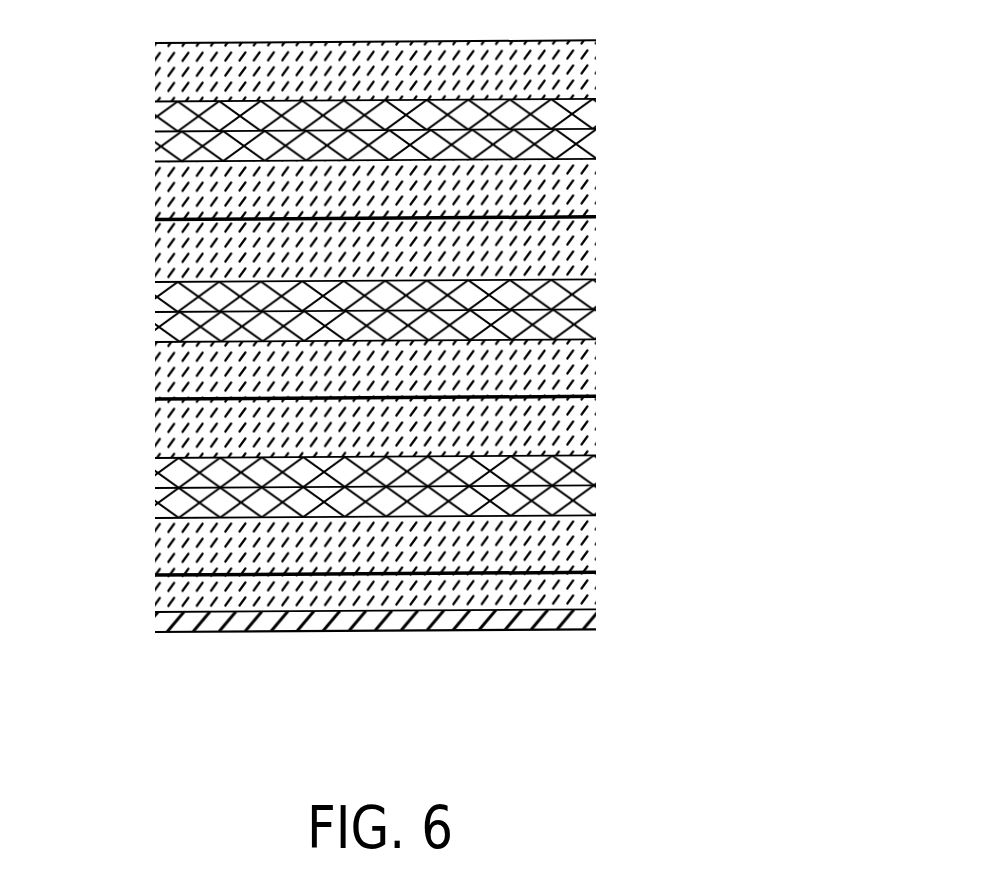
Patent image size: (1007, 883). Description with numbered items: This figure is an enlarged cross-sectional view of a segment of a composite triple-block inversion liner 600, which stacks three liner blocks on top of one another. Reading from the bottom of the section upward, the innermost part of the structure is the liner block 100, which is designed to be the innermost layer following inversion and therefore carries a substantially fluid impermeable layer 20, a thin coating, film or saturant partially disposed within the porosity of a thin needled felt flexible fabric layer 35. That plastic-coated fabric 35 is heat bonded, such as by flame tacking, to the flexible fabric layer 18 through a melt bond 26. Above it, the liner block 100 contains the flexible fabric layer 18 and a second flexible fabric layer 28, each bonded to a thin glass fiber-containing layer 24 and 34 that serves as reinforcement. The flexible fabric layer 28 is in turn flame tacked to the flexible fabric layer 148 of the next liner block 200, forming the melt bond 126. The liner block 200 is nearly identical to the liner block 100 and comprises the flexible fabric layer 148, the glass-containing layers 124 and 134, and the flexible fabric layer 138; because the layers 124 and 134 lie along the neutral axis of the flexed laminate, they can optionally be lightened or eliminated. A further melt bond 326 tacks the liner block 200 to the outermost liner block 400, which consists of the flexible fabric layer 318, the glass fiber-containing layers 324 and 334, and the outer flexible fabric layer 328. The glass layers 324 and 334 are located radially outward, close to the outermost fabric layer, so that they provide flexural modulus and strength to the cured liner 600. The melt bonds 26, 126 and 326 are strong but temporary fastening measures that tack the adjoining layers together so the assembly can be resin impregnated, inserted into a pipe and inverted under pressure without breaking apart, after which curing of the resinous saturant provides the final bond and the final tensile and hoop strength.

The composite liner 600 is at (443, 371).
The liner block 400 is at (376, 145).
The liner block 200 is at (376, 312).
The liner block 100 is at (384, 492).
The flexible fabric layer 328 is at (586, 70).
The glass fiber-containing layer 334 is at (584, 118).
The glass fiber-containing layer 324 is at (583, 148).
The flexible fabric layer 318 is at (572, 184).
The melt bond 326 is at (598, 218).
The flexible fabric layer 138 is at (178, 248).
The glass-containing layer 134 is at (160, 301).
The glass-containing layer 124 is at (173, 330).
The flexible fabric layer 148 is at (160, 372).
The melt bond 126 is at (597, 394).
The flexible fabric layer 28 is at (160, 427).
The glass fiber-containing layer 34 is at (162, 477).
The glass fiber-containing layer 24 is at (170, 506).
The flexible fabric layer 18 is at (590, 541).
The melt bond 26 is at (597, 574).
The flexible fabric layer 35 is at (388, 602).
The substantially fluid impermeable layer 20 is at (597, 615).